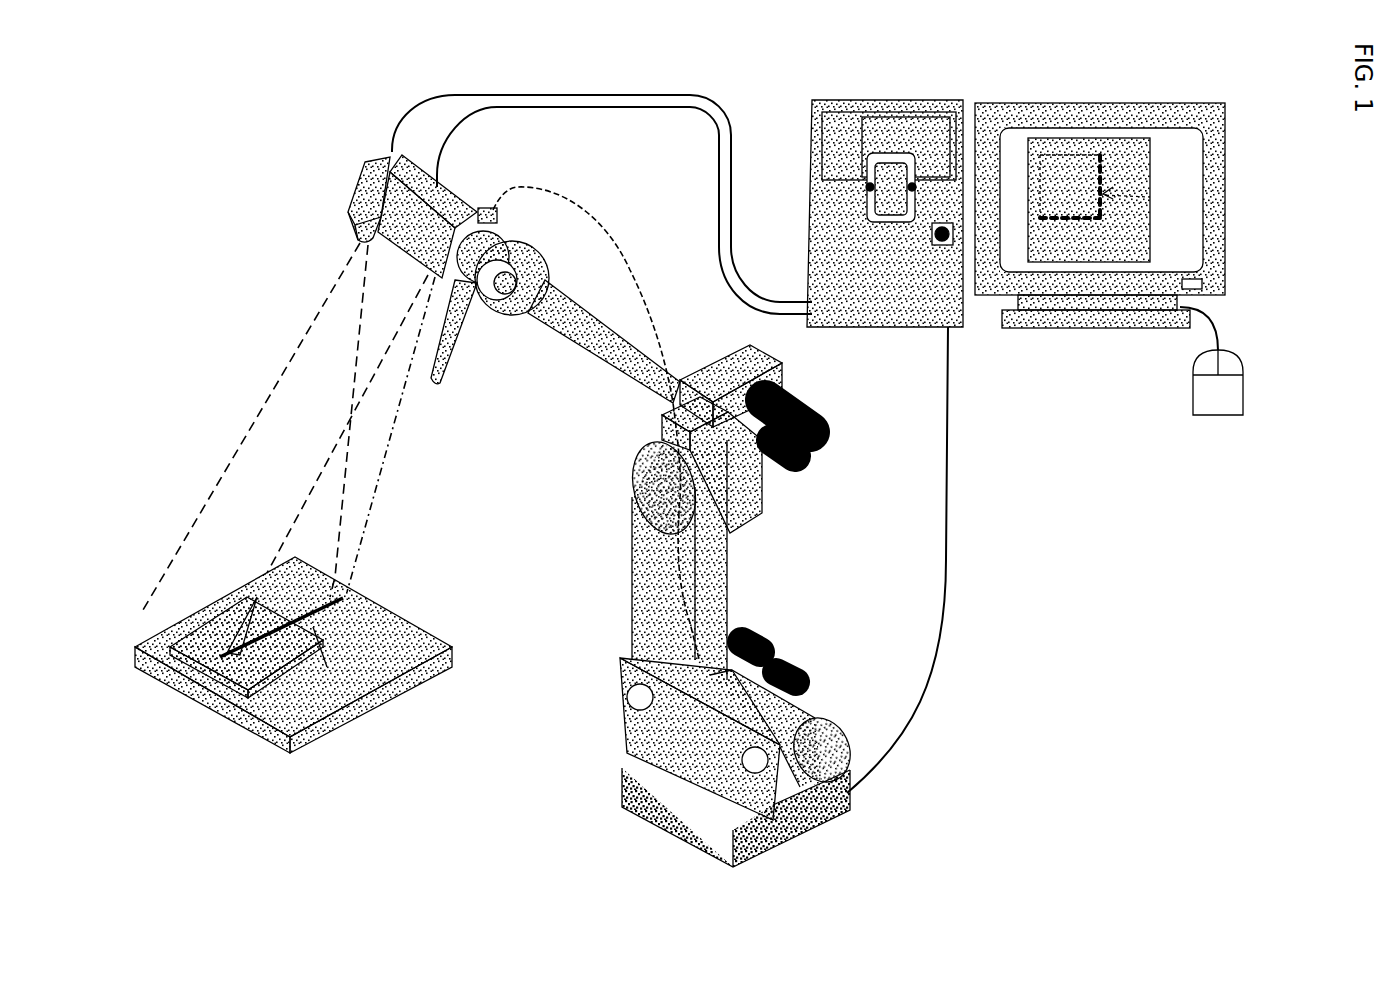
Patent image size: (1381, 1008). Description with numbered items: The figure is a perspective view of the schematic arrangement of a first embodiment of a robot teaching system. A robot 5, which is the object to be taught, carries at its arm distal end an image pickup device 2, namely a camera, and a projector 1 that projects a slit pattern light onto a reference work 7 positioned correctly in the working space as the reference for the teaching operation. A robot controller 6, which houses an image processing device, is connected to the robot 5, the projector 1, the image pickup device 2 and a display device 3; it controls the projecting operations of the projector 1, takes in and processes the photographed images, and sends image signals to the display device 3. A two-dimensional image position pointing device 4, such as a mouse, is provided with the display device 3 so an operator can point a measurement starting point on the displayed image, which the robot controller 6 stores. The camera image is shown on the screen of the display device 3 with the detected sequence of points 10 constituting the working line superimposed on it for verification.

The projector 1 is at (452, 193).
The image pickup device 2 is at (378, 160).
The display device 3 is at (1212, 123).
The 2-dimensional image position pointing device 4 is at (1225, 365).
The robot 5 is at (805, 705).
The robot controller 6 is at (965, 103).
The reference work 7 is at (397, 628).
The sequence of points 10 is at (1153, 197).